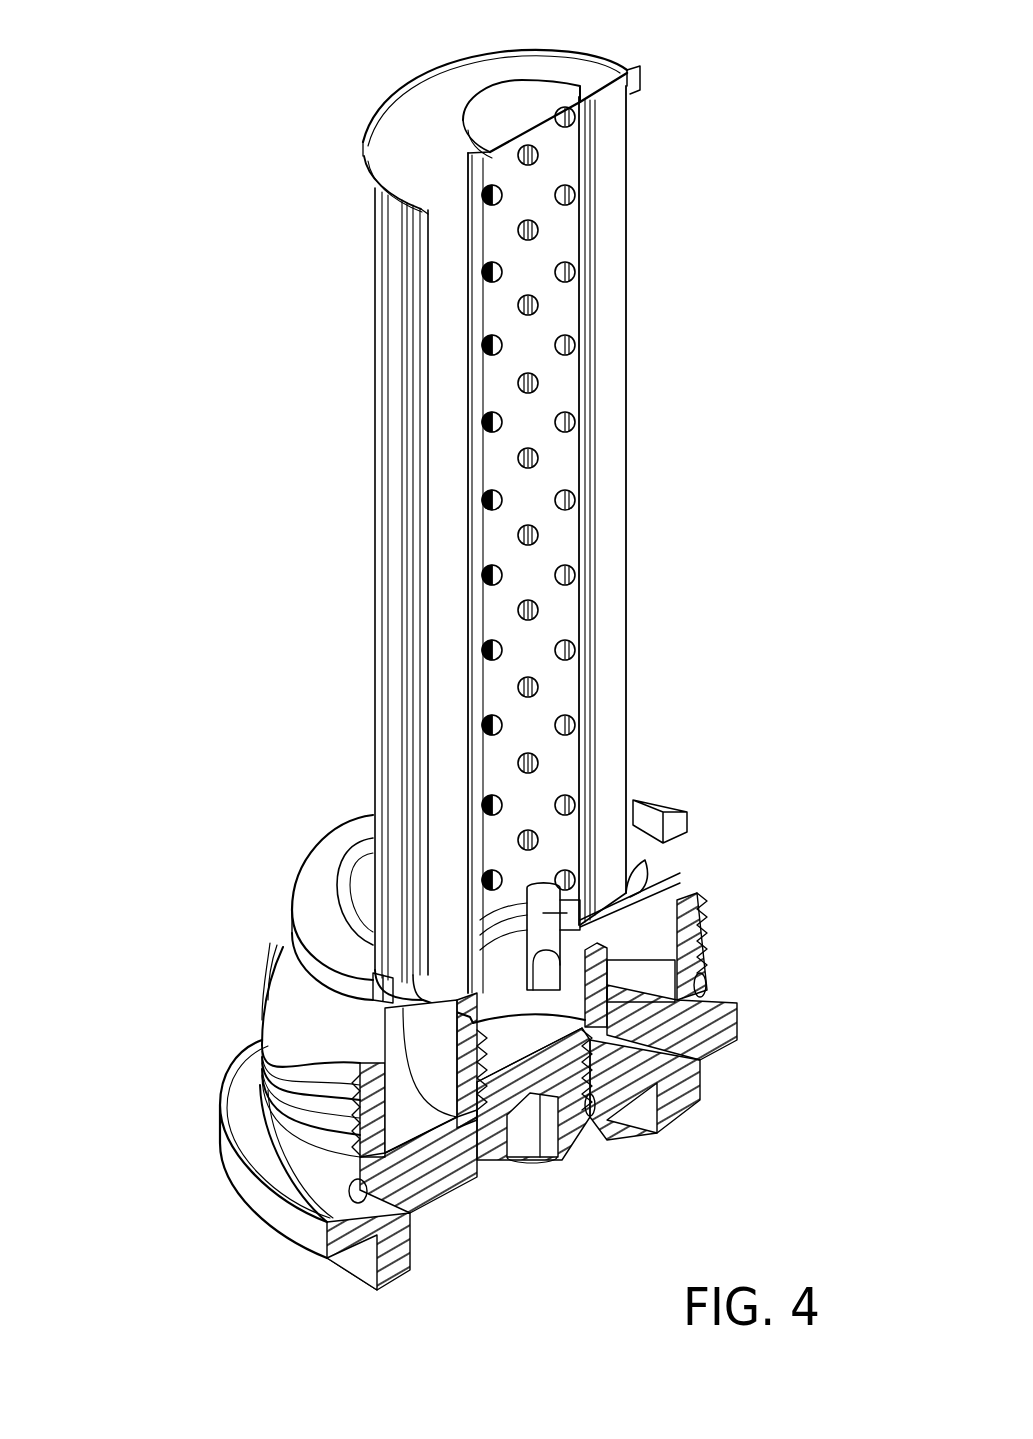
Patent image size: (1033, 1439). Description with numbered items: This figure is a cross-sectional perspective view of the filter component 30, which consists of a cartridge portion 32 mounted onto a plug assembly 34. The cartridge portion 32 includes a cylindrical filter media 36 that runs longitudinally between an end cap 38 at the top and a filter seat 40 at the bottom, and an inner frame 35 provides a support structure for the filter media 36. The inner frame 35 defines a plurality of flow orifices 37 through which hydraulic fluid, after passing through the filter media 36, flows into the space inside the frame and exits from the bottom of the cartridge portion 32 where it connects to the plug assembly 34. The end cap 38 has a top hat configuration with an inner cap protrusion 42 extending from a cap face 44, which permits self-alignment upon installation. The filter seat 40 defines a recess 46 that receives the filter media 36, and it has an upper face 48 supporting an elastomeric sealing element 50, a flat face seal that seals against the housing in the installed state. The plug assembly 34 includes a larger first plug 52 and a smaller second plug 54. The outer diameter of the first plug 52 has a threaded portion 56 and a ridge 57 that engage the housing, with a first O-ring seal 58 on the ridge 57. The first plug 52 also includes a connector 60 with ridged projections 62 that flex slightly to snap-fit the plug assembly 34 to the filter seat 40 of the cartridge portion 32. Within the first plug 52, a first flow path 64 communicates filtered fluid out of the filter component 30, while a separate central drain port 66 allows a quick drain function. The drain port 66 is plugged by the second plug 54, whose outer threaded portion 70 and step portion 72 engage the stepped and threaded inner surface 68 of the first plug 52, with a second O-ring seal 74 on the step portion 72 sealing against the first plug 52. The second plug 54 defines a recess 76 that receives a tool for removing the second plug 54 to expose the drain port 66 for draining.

The filter component 30 is at (378, 230).
The cartridge portion 32 is at (298, 887).
The plug assembly 34 is at (146, 1180).
The inner frame 35 is at (535, 360).
The filter media 36 is at (372, 573).
The flow orifices 37 is at (540, 458).
The end cap 38 is at (648, 73).
The filter seat 40 is at (387, 1000).
The inner cap protrusion 42 is at (505, 97).
The cap face 44 is at (590, 75).
The recess 46 is at (640, 888).
The upper face 48 is at (347, 907).
The sealing element 50 is at (310, 923).
The first plug 52 is at (700, 980).
The second plug 54 is at (555, 1178).
The threaded portion 56 is at (270, 1082).
The ridge 57 is at (287, 1183).
The first O-ring seal 58 is at (268, 1118).
The connector 60 is at (640, 838).
The ridged projections 62 is at (545, 900).
The first flow path 64 is at (700, 1058).
The drain port 66 is at (508, 1007).
The inner surface 68 is at (430, 1195).
The threaded portion 70 is at (590, 1100).
The step portion 72 is at (595, 1110).
The second O-ring seal 74 is at (490, 1160).
The recess 76 is at (525, 1140).